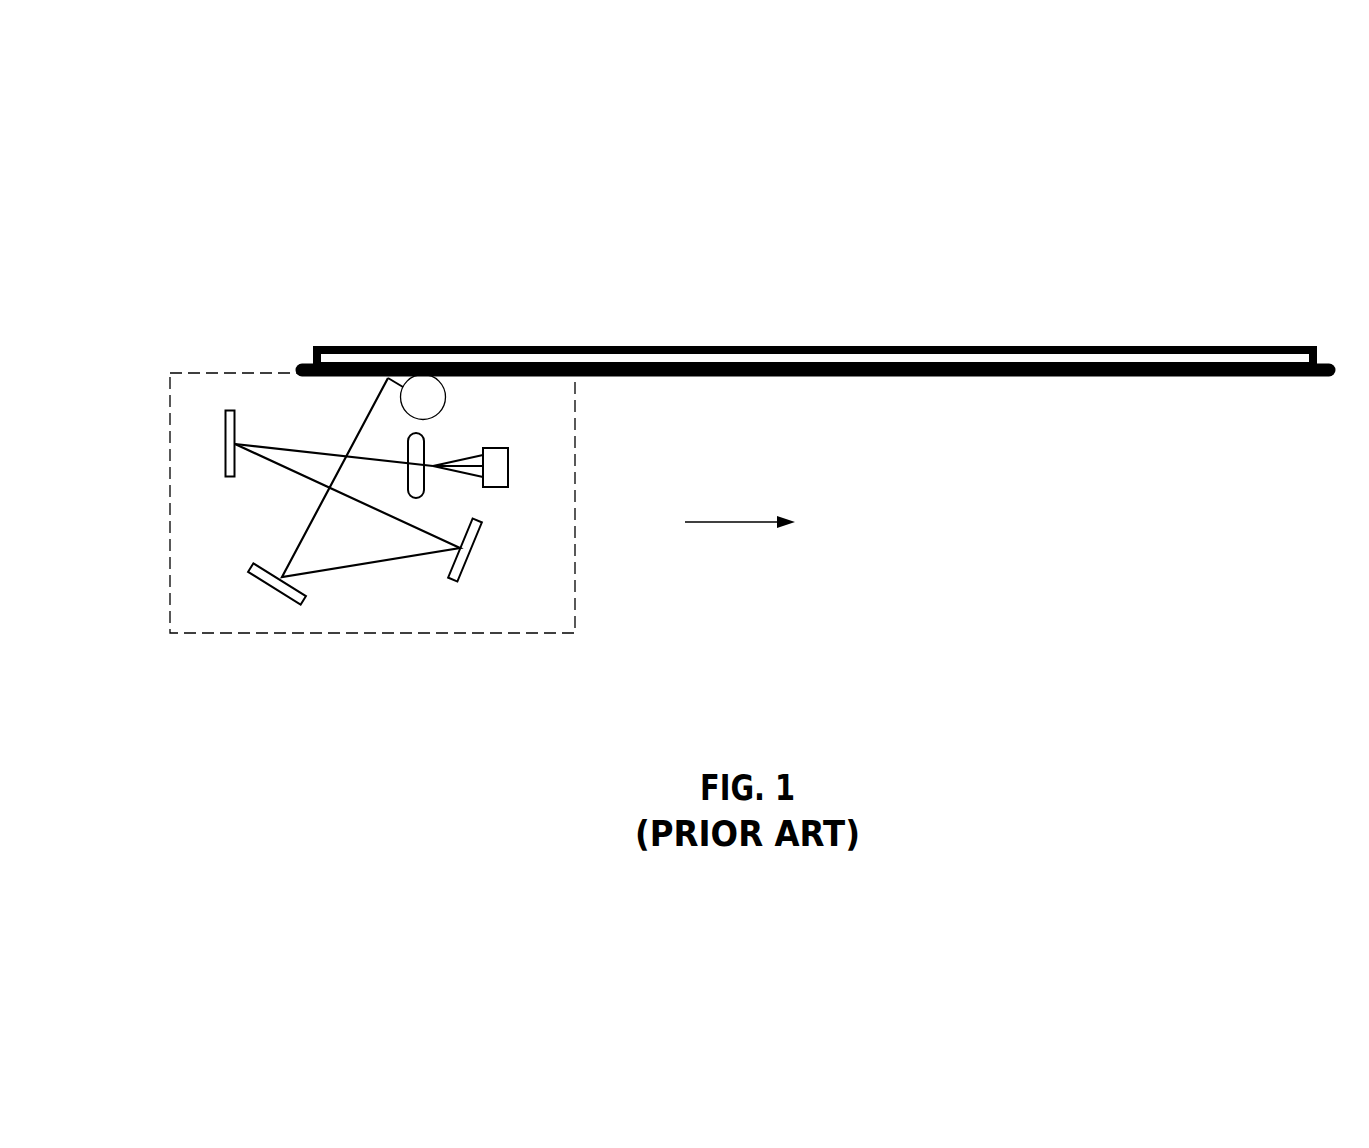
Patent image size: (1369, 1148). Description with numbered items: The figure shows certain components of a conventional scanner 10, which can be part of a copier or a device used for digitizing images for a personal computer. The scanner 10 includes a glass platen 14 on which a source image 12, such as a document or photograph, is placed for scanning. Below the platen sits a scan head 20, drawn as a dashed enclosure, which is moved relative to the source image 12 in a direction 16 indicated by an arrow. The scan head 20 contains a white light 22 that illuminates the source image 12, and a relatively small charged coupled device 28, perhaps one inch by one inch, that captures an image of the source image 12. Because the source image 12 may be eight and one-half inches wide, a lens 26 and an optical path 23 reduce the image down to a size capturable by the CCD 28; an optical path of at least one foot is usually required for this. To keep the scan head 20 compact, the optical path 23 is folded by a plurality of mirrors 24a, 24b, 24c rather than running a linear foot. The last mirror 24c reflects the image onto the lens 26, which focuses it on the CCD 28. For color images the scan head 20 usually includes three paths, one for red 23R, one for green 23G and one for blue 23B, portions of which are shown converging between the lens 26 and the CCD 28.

The scanner 10 is at (390, 140).
The source image 12 is at (1017, 343).
The glass platen 14 is at (1277, 377).
The direction 16 is at (740, 522).
The scan head 20 is at (240, 704).
The white light 22 is at (400, 405).
The optical path 23 is at (372, 563).
The red path 23R is at (443, 468).
The green path 23G is at (465, 466).
The blue path 23B is at (470, 478).
The mirror 24a is at (270, 583).
The mirror 24b is at (470, 558).
The last mirror 24c is at (225, 445).
The lens 26 is at (405, 468).
The charged coupled device 28 is at (508, 467).